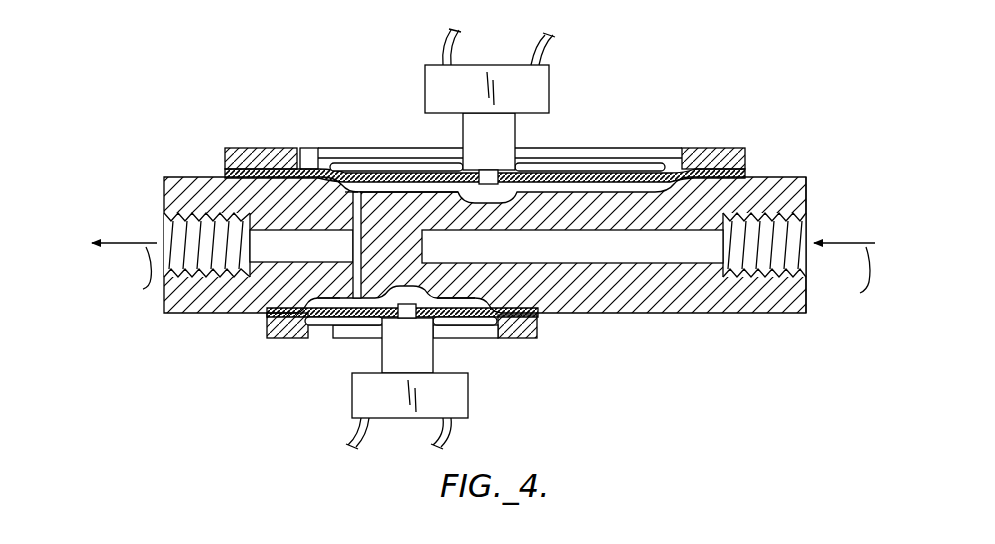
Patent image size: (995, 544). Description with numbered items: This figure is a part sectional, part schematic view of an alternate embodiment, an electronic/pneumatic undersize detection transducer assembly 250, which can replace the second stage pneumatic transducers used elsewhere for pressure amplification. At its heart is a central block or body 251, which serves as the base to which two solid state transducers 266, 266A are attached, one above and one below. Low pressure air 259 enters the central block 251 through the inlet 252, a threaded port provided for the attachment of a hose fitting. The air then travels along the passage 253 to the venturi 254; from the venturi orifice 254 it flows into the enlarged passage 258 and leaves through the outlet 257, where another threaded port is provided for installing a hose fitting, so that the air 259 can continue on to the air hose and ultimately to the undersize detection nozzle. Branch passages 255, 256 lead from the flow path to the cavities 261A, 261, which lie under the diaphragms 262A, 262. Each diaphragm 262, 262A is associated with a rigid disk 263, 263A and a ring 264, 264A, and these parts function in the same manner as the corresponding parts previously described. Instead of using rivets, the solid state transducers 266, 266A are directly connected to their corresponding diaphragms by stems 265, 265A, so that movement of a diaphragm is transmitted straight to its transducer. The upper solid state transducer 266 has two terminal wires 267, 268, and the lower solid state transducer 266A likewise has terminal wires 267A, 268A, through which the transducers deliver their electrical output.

The electronic/pneumatic undersize detection transducer assembly 250 is at (697, 50).
The central block 251 is at (783, 180).
The inlet 252 is at (816, 222).
The passage 253 is at (682, 250).
The venturi 254 is at (348, 247).
The branch passage 255 is at (338, 292).
The branch passage 256 is at (350, 198).
The outlet 257 is at (160, 227).
The enlarged passage 258 is at (273, 240).
The low pressure air 259 is at (483, 274).
The cavity 261 is at (650, 166).
The cavity 261A is at (487, 317).
The diaphragm 262 is at (640, 172).
The diaphragm 262A is at (483, 317).
The rigid disk 263 is at (563, 172).
The rigid disk 263A is at (450, 323).
The ring 264 is at (233, 160).
The ring 264A is at (267, 328).
The stem 265 is at (462, 134).
The stem 265A is at (383, 355).
The solid state transducer 266 is at (436, 88).
The solid state transducer 266A is at (467, 402).
The terminal wire 267 is at (552, 45).
The terminal wire 267A is at (452, 432).
The terminal wire 268 is at (441, 47).
The terminal wire 268A is at (353, 426).